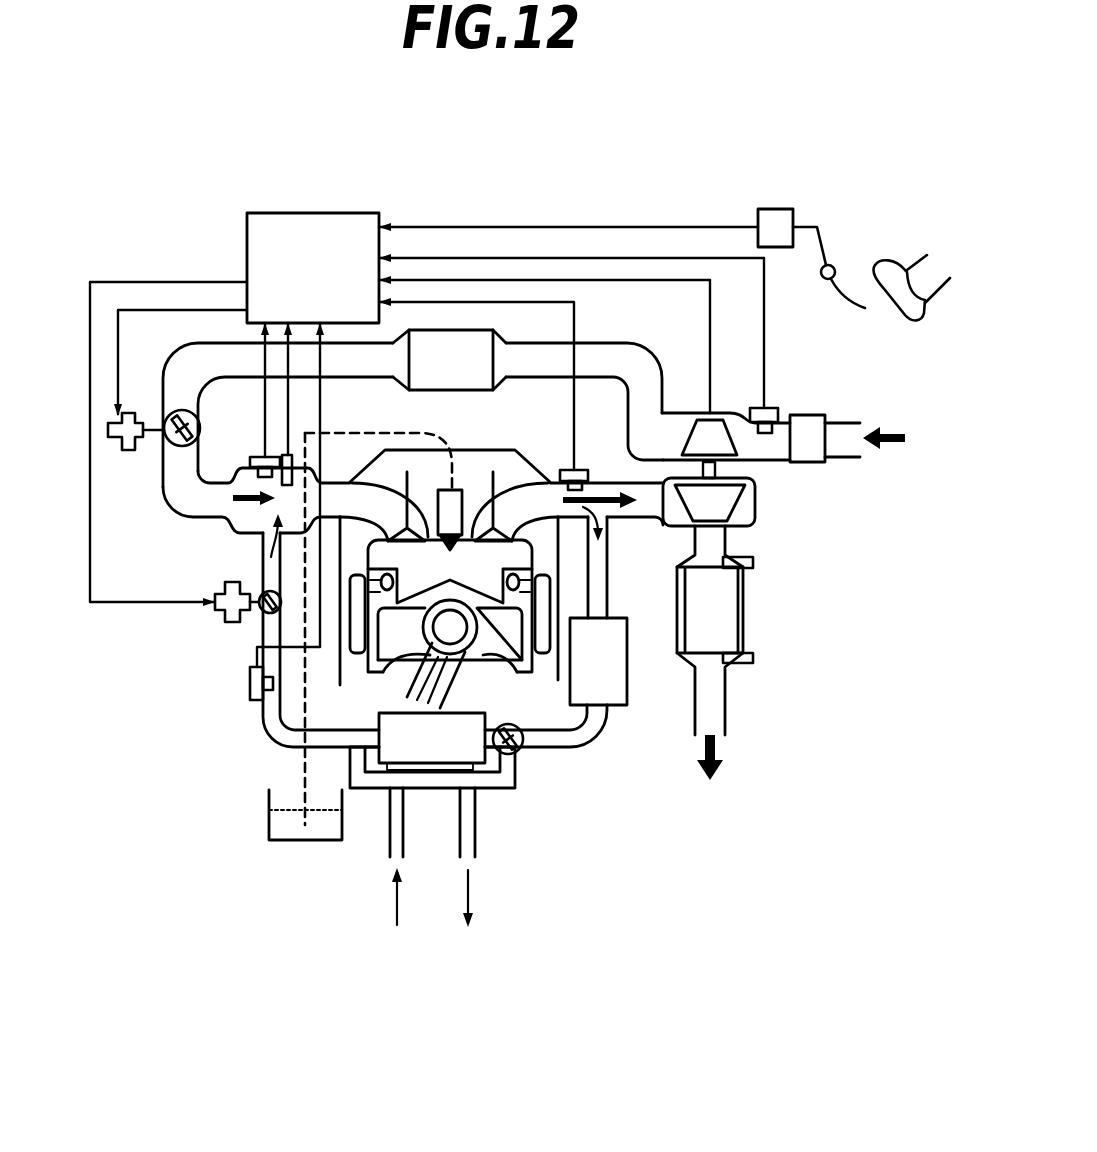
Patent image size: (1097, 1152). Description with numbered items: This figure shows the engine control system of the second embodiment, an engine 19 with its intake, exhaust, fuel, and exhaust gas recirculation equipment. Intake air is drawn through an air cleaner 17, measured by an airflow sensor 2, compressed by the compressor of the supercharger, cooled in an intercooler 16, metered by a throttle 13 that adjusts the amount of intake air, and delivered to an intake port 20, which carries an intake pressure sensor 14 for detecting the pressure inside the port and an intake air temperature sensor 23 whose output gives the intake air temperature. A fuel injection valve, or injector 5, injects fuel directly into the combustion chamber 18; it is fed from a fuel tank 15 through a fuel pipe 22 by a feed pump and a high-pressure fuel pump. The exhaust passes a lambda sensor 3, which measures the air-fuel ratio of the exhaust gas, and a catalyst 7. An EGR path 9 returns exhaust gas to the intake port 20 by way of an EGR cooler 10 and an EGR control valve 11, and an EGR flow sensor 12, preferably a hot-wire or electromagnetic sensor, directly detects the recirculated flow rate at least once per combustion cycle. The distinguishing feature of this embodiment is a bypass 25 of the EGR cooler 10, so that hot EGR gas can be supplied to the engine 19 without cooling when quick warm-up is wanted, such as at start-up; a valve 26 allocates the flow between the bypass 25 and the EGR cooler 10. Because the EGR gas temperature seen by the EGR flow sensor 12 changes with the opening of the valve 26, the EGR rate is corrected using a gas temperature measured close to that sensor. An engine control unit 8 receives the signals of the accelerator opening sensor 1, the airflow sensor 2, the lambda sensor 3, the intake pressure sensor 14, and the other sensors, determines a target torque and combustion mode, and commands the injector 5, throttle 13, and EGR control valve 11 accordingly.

The accelerator opening sensor 1 is at (775, 209).
The airflow sensor 2 is at (757, 408).
The lambda sensor 3 is at (575, 470).
The fuel injection valve 5 is at (458, 489).
The catalyst 7 is at (718, 610).
The engine control unit 8 is at (247, 242).
The EGR path 9 is at (600, 750).
The EGR cooler 10 is at (379, 714).
The EGR control valve 11 is at (232, 622).
The EGR flow sensor 12 is at (250, 685).
The throttle 13 is at (125, 450).
The intake pressure sensor 14 is at (254, 457).
The fuel tank 15 is at (269, 805).
The intercooler 16 is at (484, 330).
The air cleaner 17 is at (806, 415).
The combustion chamber 18 is at (517, 557).
The engine 19 is at (515, 615).
The intake port 20 is at (176, 488).
The fuel pipe 22 is at (305, 768).
The intake air temperature sensor 23 is at (306, 433).
The bypass 25 is at (438, 790).
The valve 26 is at (518, 757).